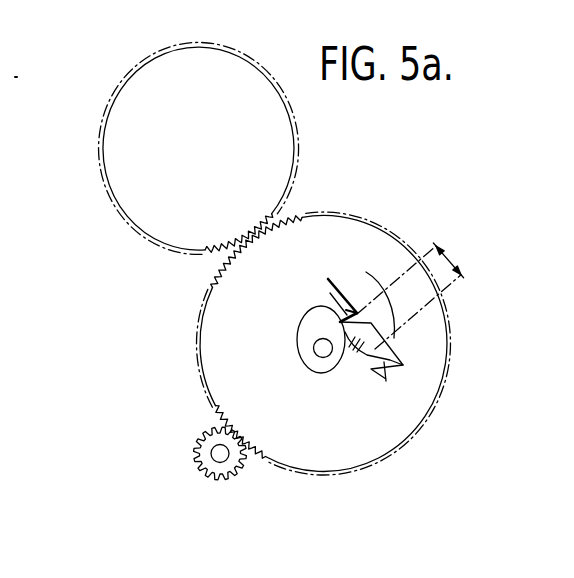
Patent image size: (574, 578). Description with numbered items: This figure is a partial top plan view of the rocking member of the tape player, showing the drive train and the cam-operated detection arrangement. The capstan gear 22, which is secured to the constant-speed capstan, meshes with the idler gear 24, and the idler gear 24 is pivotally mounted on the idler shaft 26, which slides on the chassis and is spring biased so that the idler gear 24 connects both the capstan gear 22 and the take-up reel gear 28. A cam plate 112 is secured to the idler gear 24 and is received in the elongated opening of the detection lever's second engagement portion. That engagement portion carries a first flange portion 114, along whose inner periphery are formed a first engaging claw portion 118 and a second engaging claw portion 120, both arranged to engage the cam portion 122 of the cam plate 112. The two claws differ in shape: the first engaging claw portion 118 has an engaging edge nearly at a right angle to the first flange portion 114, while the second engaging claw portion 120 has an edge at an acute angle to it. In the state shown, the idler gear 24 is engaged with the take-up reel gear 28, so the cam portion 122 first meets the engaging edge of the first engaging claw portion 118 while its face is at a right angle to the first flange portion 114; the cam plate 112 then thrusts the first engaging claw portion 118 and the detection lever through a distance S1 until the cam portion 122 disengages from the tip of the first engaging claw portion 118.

The take-up reel gear 28 is at (184, 241).
The idler gear 24 is at (208, 376).
The capstan gear 22 is at (232, 461).
The idler shaft 26 is at (322, 350).
The cam plate 112 is at (313, 322).
The first flange portion 114 is at (337, 280).
The first engaging claw portion 118 is at (358, 312).
The second engaging claw portion 120 is at (384, 374).
The cam portion 122 is at (330, 293).
The distance S1 is at (415, 296).